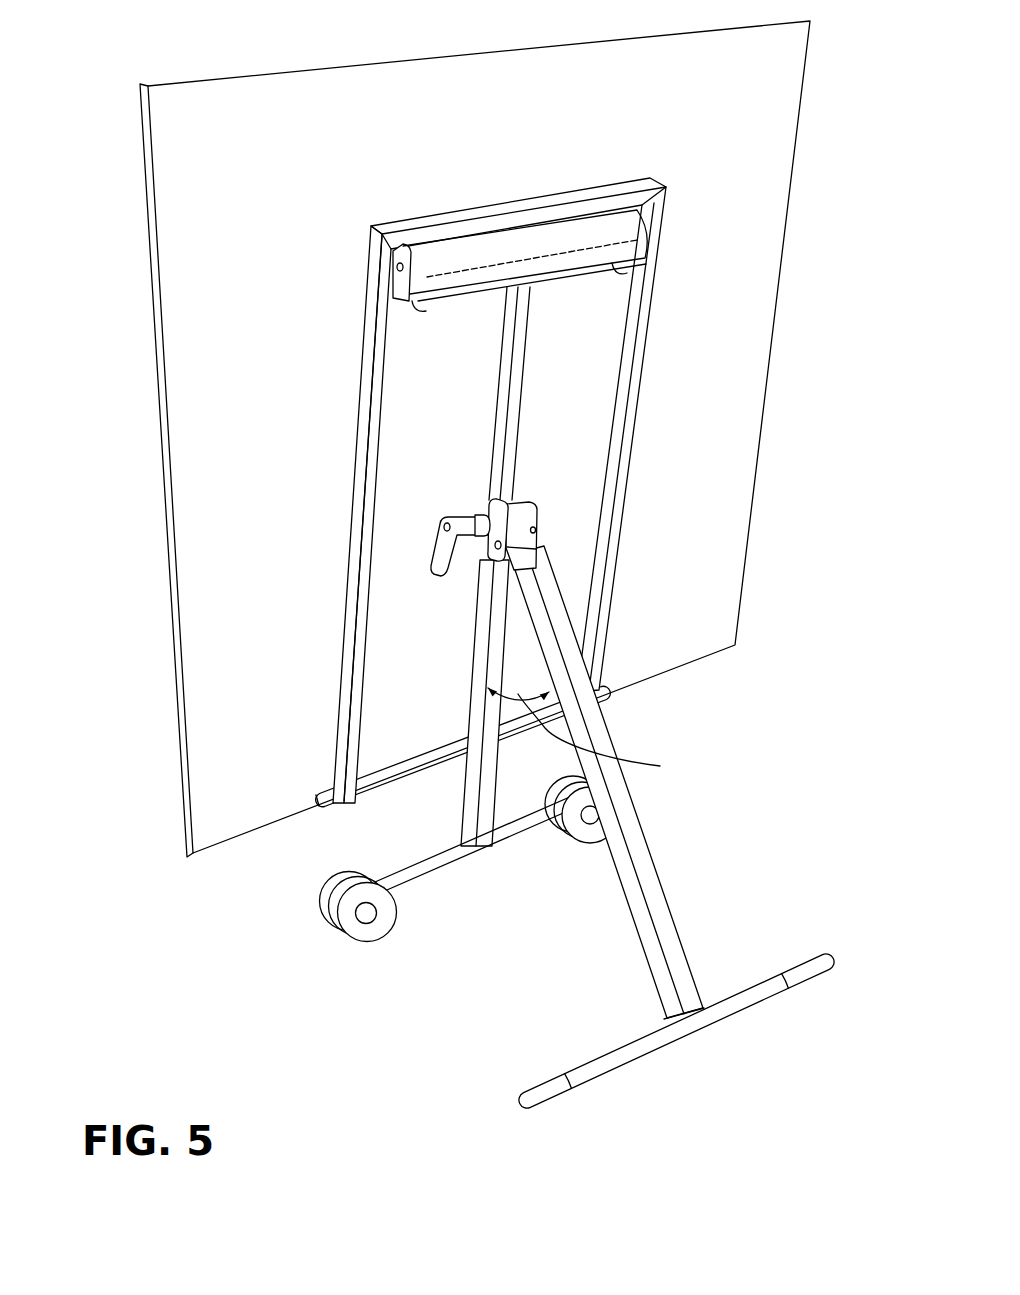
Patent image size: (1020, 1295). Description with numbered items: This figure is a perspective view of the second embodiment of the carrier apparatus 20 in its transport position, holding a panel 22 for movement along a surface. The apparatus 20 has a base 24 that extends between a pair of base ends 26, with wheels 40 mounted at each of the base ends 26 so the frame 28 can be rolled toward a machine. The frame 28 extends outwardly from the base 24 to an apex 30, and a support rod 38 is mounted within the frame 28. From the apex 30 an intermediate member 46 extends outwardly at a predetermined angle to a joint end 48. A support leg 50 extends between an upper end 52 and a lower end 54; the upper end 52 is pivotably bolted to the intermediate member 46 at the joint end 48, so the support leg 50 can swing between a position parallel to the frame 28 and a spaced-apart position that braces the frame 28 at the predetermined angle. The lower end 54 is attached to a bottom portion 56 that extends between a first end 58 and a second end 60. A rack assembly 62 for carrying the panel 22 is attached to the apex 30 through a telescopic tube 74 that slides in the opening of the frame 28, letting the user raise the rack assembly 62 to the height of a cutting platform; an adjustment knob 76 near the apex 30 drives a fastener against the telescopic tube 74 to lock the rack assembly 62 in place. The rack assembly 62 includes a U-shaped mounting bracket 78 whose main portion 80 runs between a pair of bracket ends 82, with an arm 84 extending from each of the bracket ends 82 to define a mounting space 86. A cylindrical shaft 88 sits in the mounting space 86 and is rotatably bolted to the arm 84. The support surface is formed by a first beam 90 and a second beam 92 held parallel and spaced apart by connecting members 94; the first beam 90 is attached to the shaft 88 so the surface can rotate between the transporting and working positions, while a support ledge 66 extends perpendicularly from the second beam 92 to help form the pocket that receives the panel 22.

The carrier apparatus 20 is at (465, 595).
The panel 22 is at (280, 85).
The base 24 is at (487, 850).
The base ends 26 is at (469, 885).
The frame 28 is at (464, 700).
The apex 30 is at (498, 501).
The support rod 38 is at (517, 505).
The wheels 40 is at (352, 930).
The intermediate member 46 is at (535, 530).
The joint end 48 is at (513, 550).
The support leg 50 is at (690, 859).
The upper end 52 is at (553, 590).
The lower end 54 is at (694, 1050).
The bottom portion 56 is at (661, 1020).
The first end 58 is at (561, 1090).
The second end 60 is at (805, 973).
The rack assembly 62 is at (483, 496).
The support ledge 66 is at (323, 790).
The telescopic tube 74 is at (497, 443).
The adjustment knob 76 is at (441, 551).
The mounting bracket 78 is at (396, 262).
The main portion 80 is at (527, 275).
The bracket ends 82 is at (420, 302).
The arm 84 is at (374, 272).
The mounting space 86 is at (501, 263).
The shaft 88 is at (560, 227).
The first beam 90 is at (440, 227).
The second beam 92 is at (387, 776).
The connecting members 94 is at (347, 590).